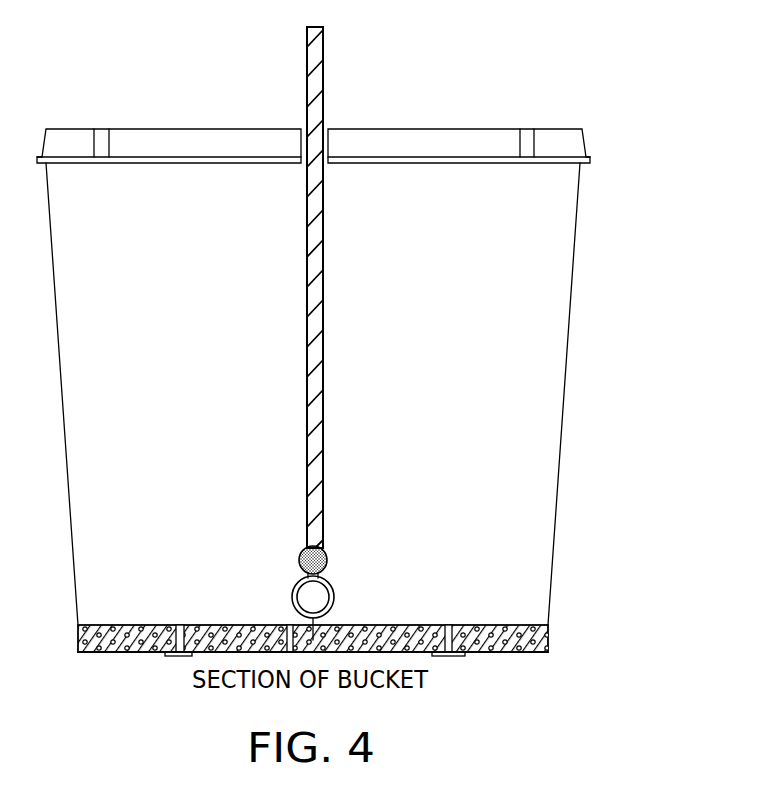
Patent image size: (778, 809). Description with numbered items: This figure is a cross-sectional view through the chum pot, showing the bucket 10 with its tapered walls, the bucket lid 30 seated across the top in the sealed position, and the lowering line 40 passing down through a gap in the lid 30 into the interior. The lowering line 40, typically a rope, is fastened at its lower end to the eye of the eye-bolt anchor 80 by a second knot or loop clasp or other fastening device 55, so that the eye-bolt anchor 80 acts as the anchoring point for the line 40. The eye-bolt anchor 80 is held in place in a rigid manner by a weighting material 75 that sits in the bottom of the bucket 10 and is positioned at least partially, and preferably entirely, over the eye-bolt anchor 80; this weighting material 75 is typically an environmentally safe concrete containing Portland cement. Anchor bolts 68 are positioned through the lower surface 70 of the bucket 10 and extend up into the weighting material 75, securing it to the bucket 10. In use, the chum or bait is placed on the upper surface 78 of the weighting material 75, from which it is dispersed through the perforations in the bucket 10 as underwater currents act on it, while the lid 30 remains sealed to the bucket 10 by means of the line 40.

The bucket 10 is at (562, 460).
The bucket lid 30 is at (586, 140).
The lowering line 40 is at (323, 283).
The second knot or loop clasp or other fastening device 55 is at (327, 558).
The eye-bolt anchor 80 is at (334, 597).
The weighting material 75 is at (402, 627).
The upper surface 78 is at (212, 625).
The anchor bolts 68 is at (172, 655).
The lower surface 70 is at (512, 654).